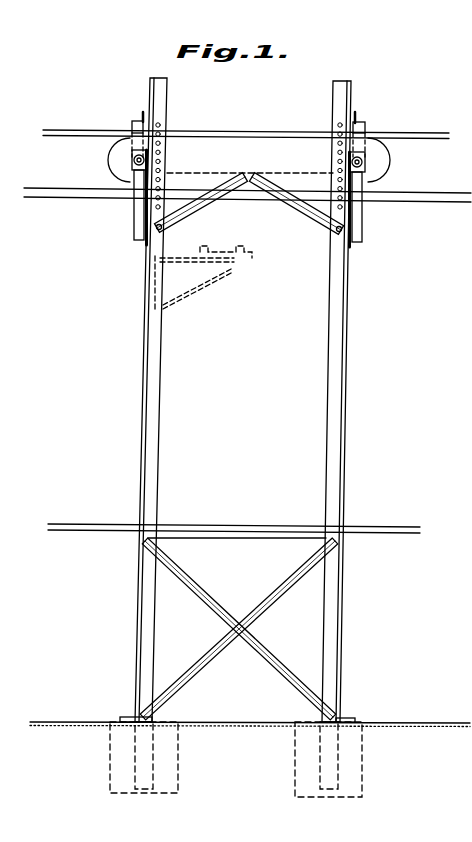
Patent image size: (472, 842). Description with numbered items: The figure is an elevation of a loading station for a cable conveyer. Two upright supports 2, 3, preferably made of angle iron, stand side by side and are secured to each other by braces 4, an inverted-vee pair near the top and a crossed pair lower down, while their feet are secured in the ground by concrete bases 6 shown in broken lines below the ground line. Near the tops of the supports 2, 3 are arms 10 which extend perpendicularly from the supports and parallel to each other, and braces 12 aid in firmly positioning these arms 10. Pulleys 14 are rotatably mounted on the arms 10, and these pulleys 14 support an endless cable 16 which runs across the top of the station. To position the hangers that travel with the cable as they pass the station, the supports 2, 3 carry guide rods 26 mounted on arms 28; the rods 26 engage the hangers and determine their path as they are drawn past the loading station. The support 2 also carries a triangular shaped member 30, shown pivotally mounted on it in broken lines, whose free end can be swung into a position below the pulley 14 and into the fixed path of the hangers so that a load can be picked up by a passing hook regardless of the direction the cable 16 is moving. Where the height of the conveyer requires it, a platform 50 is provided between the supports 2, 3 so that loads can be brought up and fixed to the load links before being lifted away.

The support 2 is at (150, 430).
The support 3 is at (345, 428).
The braces 4 is at (290, 182).
The concrete bases 6 is at (298, 756).
The arms 10 is at (136, 171).
The braces 12 is at (134, 230).
The pulleys 14 is at (111, 158).
The endless cable 16 is at (240, 130).
The guide rods 26 is at (57, 197).
The arms 28 is at (141, 112).
The triangular shaped member 30 is at (185, 294).
The platform 50 is at (252, 524).